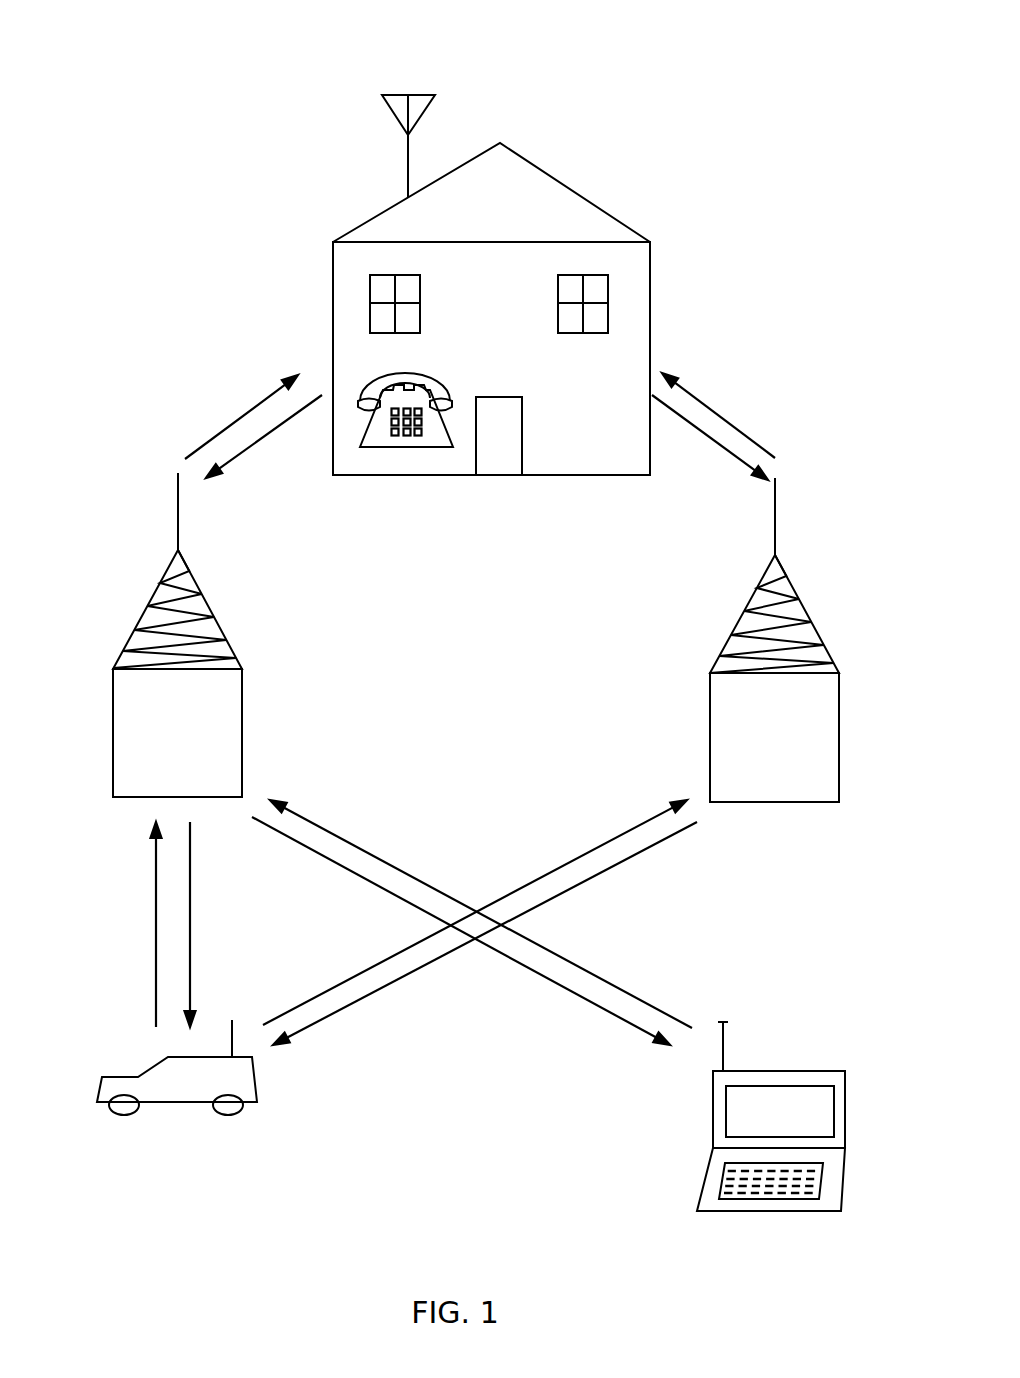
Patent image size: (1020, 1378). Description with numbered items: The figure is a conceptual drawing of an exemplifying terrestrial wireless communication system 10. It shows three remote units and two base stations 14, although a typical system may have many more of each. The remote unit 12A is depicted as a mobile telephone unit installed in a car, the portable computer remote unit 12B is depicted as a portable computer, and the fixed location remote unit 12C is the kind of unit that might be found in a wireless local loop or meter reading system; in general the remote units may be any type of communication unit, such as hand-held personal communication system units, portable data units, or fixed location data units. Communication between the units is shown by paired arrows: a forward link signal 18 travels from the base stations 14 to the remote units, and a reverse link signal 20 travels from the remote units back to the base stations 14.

The terrestrial wireless communication system 10 is at (702, 54).
The remote unit 12A is at (118, 1077).
The portable computer remote unit 12B is at (822, 1071).
The fixed location remote unit 12C is at (573, 190).
The base station 14 is at (148, 605).
The forward link signal 18 is at (257, 402).
The reverse link signal 20 is at (275, 429).